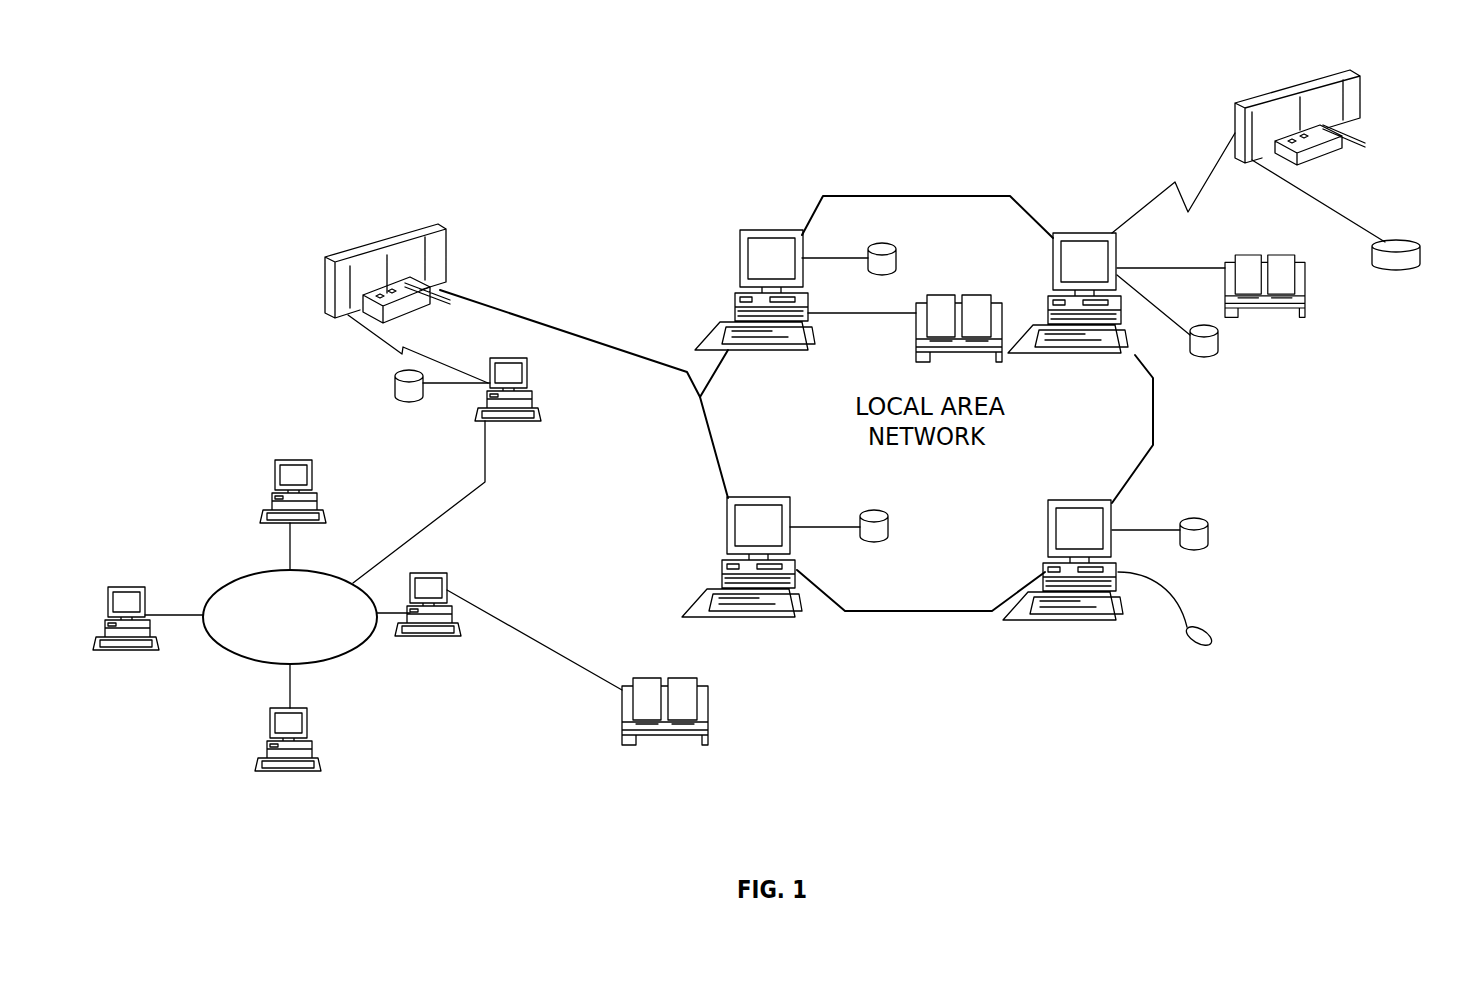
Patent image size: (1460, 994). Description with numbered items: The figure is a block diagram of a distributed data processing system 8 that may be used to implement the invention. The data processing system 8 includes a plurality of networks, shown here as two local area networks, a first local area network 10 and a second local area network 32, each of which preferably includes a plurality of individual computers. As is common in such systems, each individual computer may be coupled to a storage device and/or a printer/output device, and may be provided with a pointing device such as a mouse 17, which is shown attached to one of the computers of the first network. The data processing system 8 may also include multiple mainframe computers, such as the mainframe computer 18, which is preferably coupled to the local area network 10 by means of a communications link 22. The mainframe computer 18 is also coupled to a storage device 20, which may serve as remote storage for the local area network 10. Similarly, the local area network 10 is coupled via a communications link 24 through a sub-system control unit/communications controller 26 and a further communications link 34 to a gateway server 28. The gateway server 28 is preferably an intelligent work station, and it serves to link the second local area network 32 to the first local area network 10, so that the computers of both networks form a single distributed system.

The data processing system 8 is at (883, 197).
The local area network 10 is at (908, 612).
The mouse 17 is at (1207, 630).
The mainframe computer 18 is at (1310, 87).
The storage device 20 is at (1405, 241).
The communications link 22 is at (1217, 159).
The communications link 24 is at (568, 334).
The sub-system control unit/communications controller 26 is at (437, 225).
The gateway server 28 is at (501, 361).
The local area network 32 is at (233, 655).
The communications link 34 is at (362, 326).